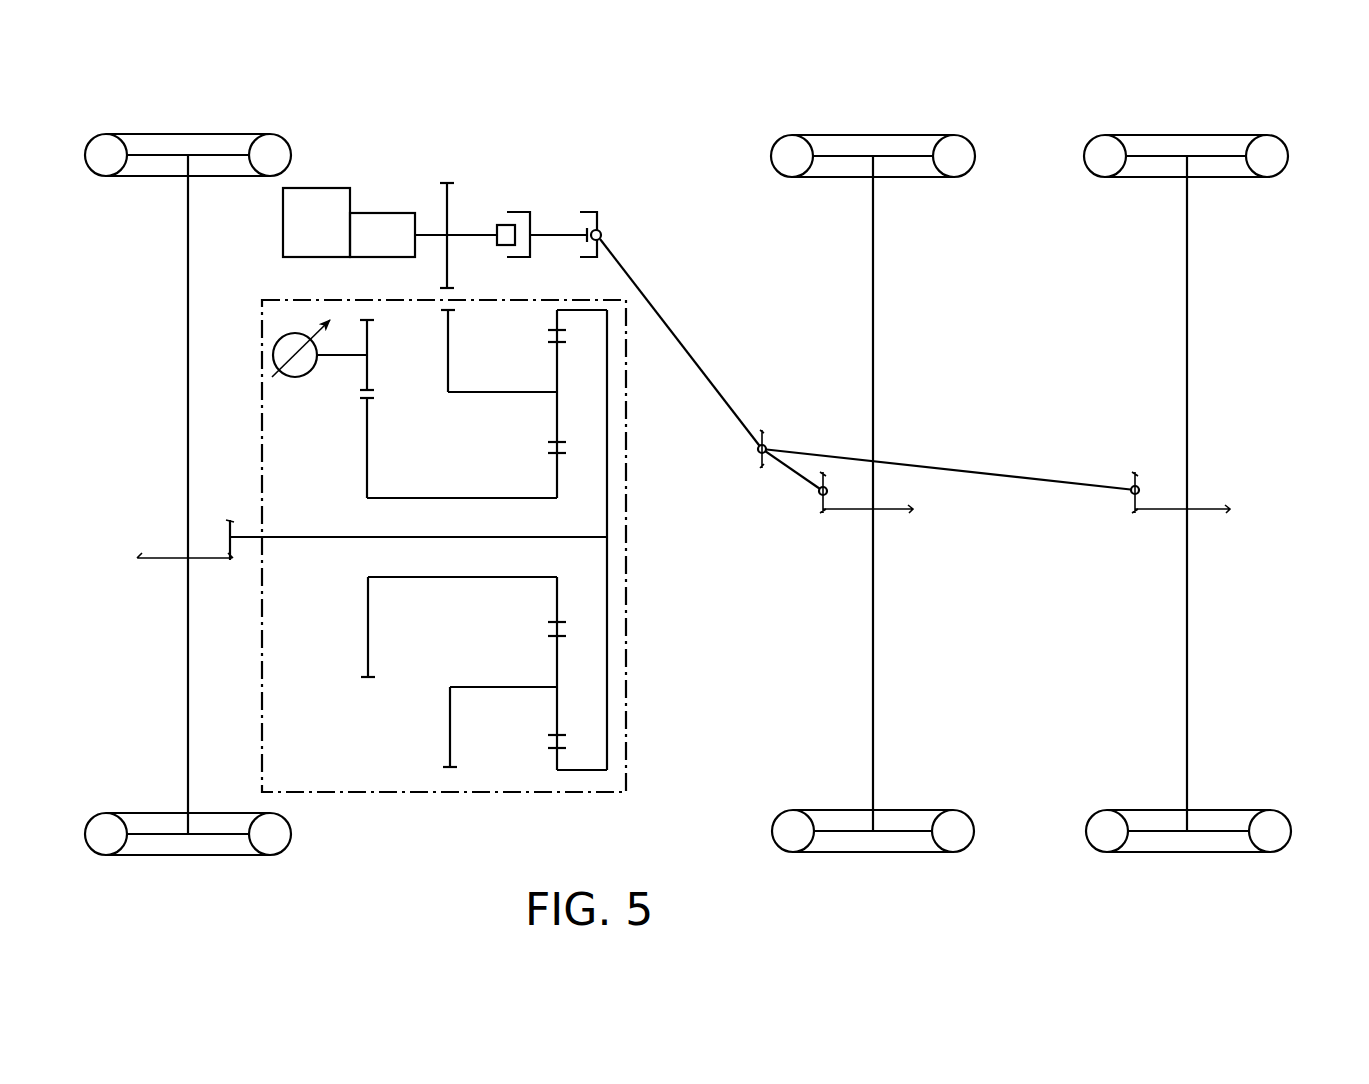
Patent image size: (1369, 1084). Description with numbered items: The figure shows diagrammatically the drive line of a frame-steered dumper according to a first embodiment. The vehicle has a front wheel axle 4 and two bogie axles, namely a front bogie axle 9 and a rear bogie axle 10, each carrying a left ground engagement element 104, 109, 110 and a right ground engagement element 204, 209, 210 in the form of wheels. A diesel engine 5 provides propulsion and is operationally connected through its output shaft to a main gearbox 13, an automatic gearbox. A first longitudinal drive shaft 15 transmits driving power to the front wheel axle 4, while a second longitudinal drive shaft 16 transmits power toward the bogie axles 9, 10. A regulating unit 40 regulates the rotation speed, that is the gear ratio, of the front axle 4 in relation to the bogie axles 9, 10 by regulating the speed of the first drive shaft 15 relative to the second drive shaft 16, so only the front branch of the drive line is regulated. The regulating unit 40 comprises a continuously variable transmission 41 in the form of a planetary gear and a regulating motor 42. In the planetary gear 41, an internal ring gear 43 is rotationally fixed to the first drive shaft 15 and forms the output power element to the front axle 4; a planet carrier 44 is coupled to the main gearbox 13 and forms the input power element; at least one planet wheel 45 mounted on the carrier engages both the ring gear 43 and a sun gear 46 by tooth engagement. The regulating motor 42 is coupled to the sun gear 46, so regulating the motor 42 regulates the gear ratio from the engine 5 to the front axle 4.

The front wheel axle 4 is at (200, 862).
The diesel engine 5 is at (332, 180).
The front bogie axle 9 is at (898, 862).
The rear bogie axle 10 is at (1178, 862).
The main gearbox 13 is at (375, 200).
The first longitudinal drive shaft 15 is at (305, 537).
The second longitudinal drive shaft 16 is at (688, 345).
The regulating unit 40 is at (540, 792).
The continuously variable transmission 41 is at (485, 767).
The regulating motor 42 is at (272, 338).
The internal ring gear 43 is at (557, 477).
The planet carrier 44 is at (448, 352).
The planet wheel 45 is at (557, 362).
The sun gear 46 is at (607, 480).
The left ground engagement element 104 is at (293, 838).
The left ground engagement element 109 is at (776, 830).
The left ground engagement element 110 is at (1288, 848).
The right ground engagement element 204 is at (275, 135).
The right ground engagement element 209 is at (975, 153).
The right ground engagement element 210 is at (1280, 138).